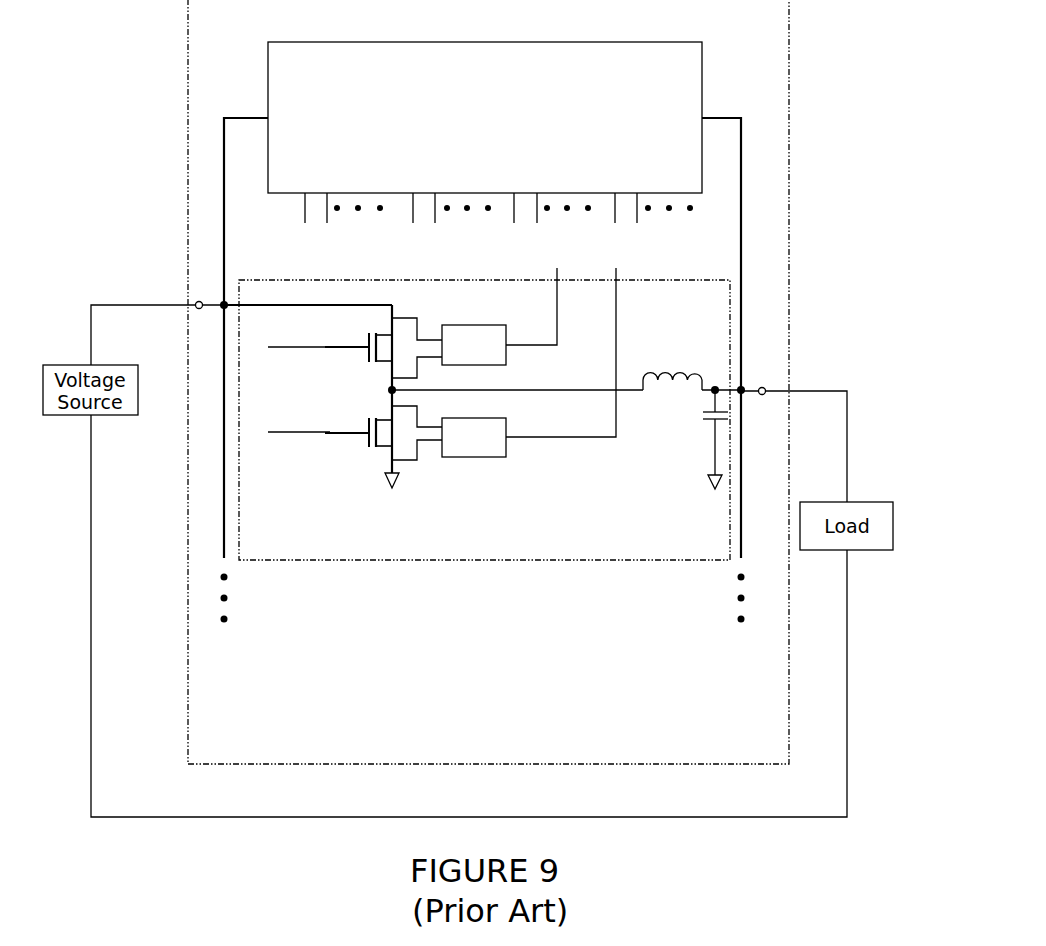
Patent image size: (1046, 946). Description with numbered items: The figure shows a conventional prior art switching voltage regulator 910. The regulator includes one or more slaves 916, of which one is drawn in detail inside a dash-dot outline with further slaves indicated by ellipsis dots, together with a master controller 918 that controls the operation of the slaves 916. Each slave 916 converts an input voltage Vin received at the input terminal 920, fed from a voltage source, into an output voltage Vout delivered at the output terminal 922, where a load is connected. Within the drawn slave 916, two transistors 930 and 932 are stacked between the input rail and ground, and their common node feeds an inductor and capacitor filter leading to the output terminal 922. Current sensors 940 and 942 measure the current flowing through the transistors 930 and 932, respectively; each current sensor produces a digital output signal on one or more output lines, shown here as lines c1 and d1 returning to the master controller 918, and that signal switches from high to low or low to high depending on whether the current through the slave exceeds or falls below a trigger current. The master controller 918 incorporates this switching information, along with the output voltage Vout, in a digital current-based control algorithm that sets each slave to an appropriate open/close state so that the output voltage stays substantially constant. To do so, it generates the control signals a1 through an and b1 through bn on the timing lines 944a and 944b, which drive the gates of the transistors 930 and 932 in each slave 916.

The voltage regulator 910 is at (769, 886).
The slave 916 is at (310, 567).
The master controller 918 is at (458, 160).
The input terminal 920 is at (180, 282).
The output terminal 922 is at (781, 373).
The transistor 930 is at (360, 336).
The transistor 932 is at (357, 454).
The current sensor 940 is at (456, 356).
The current sensor 942 is at (456, 448).
The timing line 944a is at (289, 353).
The timing line 944b is at (287, 437).